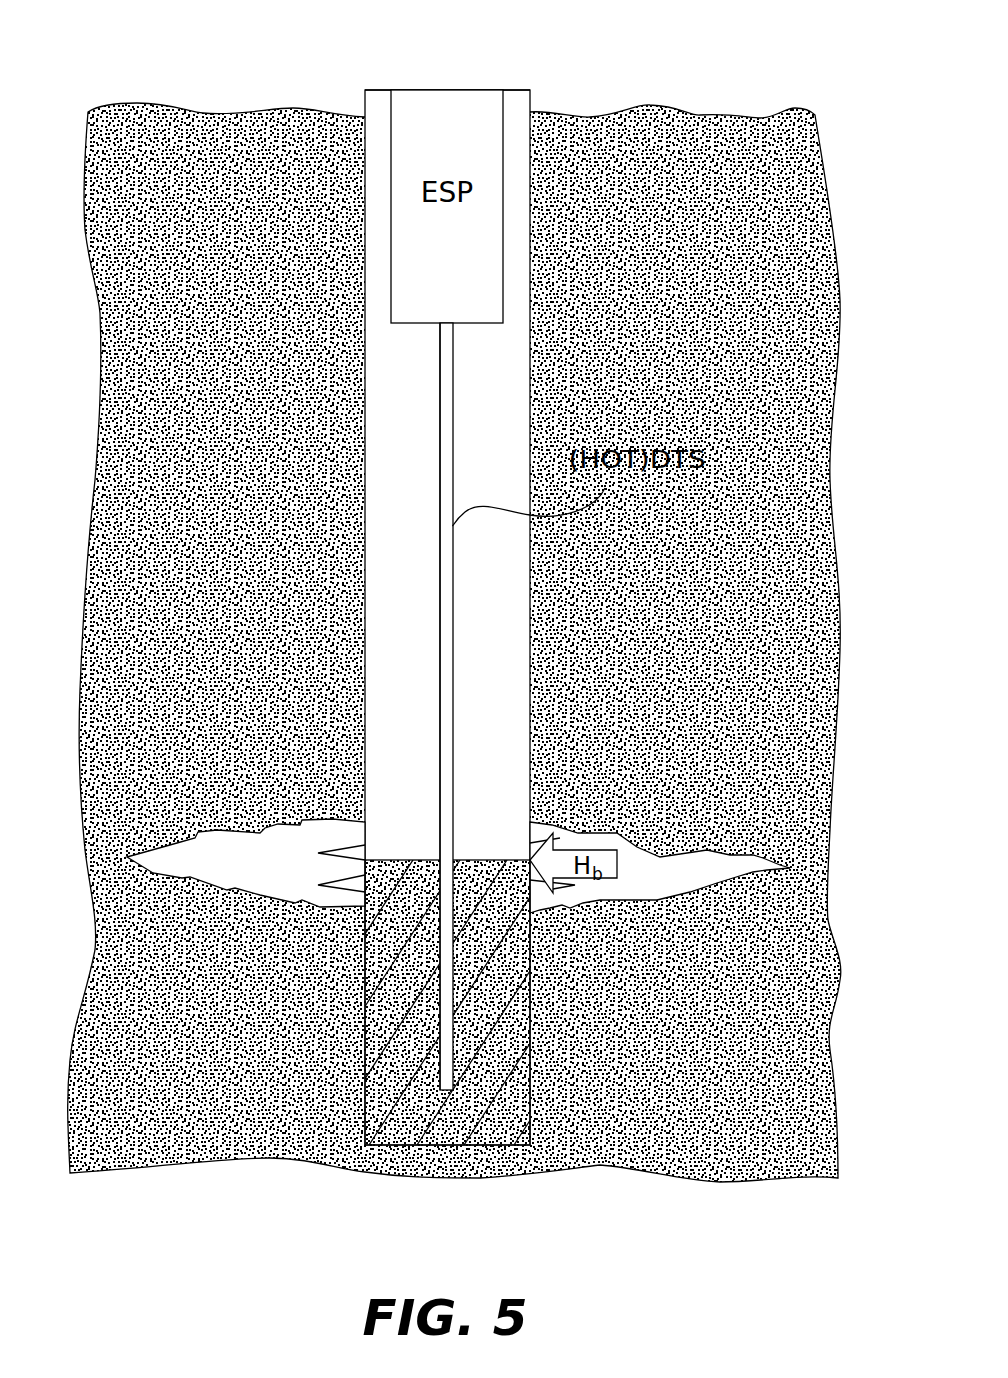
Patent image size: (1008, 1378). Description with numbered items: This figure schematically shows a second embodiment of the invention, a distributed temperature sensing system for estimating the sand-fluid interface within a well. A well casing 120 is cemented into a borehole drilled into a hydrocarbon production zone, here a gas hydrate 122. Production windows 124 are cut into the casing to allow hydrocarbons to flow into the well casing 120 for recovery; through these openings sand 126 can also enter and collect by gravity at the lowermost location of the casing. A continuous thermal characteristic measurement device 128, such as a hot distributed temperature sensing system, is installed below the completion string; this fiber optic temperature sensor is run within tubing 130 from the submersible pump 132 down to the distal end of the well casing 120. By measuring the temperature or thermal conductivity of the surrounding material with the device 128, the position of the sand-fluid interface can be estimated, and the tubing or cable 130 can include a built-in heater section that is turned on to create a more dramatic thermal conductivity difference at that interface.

The well casing 120 is at (522, 90).
The gas hydrate 122 is at (666, 557).
The production windows 124 is at (365, 850).
The sand 126 is at (532, 1141).
The continuous thermal characteristic measurement device 128 is at (455, 720).
The tubing 130 is at (440, 478).
The submersible pump 132 is at (404, 90).